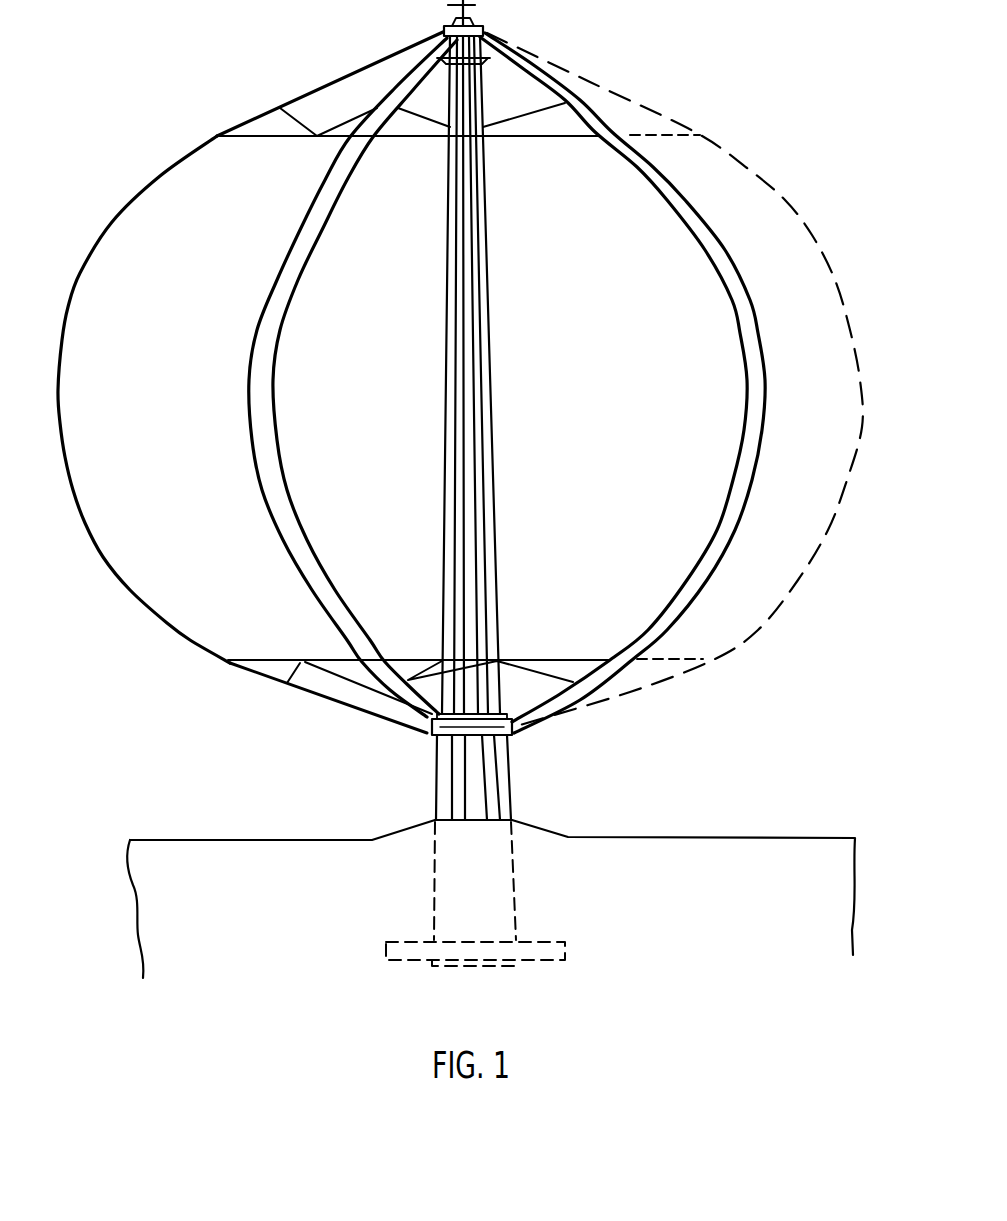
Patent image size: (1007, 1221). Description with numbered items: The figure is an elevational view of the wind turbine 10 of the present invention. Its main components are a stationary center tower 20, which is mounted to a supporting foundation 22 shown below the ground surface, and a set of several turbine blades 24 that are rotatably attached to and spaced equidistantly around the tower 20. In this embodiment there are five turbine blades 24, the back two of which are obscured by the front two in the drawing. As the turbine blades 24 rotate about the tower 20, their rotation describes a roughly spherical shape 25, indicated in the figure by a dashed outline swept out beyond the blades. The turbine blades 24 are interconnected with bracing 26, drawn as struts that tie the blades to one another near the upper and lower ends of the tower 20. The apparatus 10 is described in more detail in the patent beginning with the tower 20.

The wind turbine 10 is at (173, 647).
The stationary center tower 20 is at (489, 322).
The supporting foundation 22 is at (550, 940).
The turbine blades 24 is at (112, 224).
The roughly spherical shape 25 is at (821, 248).
The bracing 26 is at (553, 135).